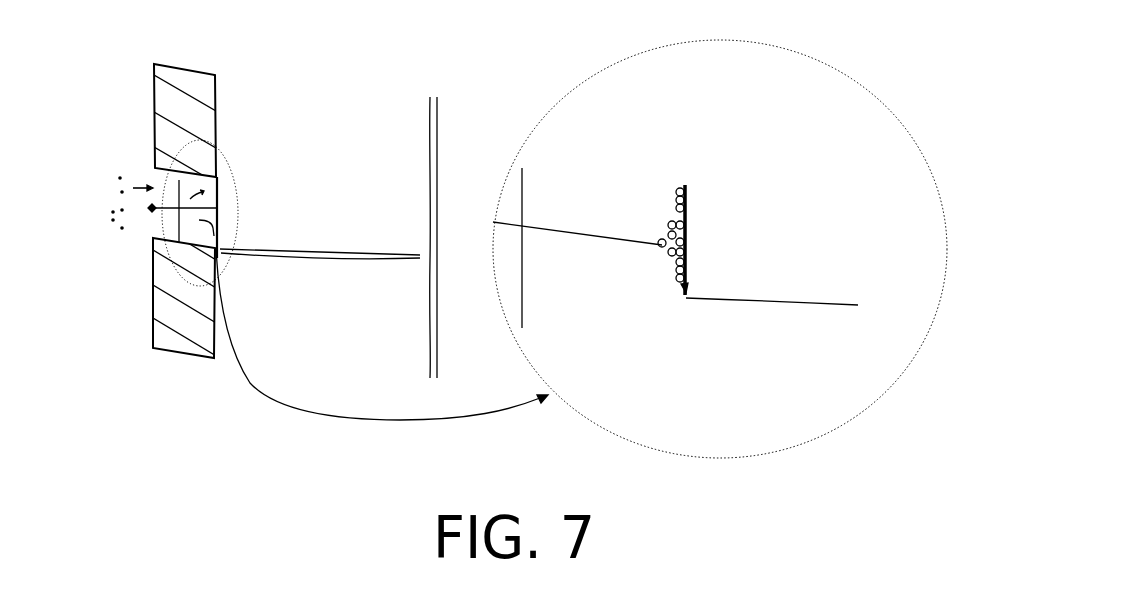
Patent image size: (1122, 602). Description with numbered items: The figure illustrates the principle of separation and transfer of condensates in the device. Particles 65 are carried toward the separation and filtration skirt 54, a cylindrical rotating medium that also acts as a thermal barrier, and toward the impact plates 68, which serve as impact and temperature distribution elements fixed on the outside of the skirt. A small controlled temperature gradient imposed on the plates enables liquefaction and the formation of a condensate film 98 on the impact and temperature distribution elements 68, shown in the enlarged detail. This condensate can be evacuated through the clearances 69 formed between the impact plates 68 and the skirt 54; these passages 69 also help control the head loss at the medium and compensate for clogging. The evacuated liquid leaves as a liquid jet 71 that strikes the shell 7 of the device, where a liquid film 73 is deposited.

The shell 7 is at (438, 333).
The separation and filtration skirt 54 is at (157, 312).
The particles 65 is at (103, 202).
The impact plate 68 is at (217, 200).
The clearance 69 is at (215, 242).
The liquid jet 71 is at (295, 253).
The liquid film 73 is at (430, 320).
The condensate film 98 is at (678, 275).